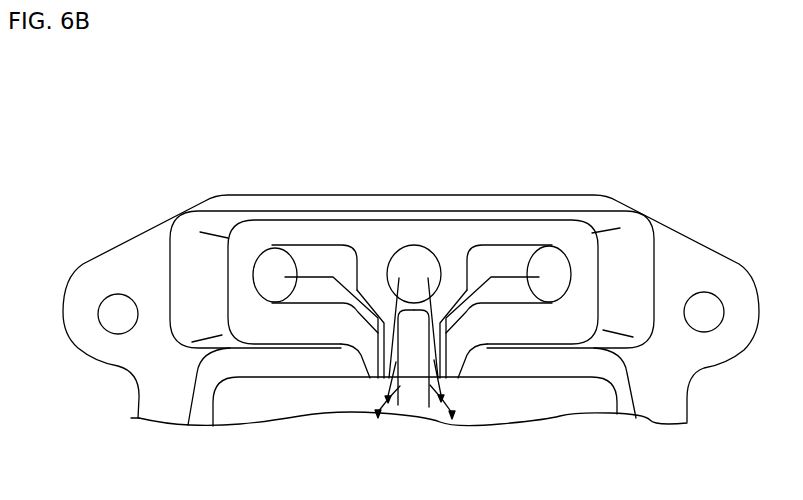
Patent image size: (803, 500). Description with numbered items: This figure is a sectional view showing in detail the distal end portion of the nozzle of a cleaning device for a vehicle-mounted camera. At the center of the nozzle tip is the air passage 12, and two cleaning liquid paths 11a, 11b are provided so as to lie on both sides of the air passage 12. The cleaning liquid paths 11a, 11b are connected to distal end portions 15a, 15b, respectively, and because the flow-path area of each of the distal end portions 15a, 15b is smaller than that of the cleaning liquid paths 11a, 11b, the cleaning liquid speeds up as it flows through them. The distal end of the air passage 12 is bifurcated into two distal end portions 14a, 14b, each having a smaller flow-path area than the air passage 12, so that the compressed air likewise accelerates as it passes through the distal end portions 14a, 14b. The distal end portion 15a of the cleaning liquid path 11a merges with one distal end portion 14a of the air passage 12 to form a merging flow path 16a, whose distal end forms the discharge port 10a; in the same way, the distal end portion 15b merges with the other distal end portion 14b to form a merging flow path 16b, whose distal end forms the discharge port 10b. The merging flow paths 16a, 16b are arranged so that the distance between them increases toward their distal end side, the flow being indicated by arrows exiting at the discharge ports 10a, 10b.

The discharge port 10a is at (385, 379).
The discharge port 10b is at (441, 379).
The cleaning liquid path 11a is at (275, 262).
The cleaning liquid path 11b is at (553, 260).
The air passage 12 is at (412, 255).
The distal end portion of the air passage 14a is at (384, 320).
The distal end portion of the air passage 14b is at (442, 320).
The distal end portion of the cleaning liquid path 15a is at (370, 326).
The distal end portion of the cleaning liquid path 15b is at (457, 325).
The merging flow path 16a is at (398, 408).
The merging flow path 16b is at (430, 410).